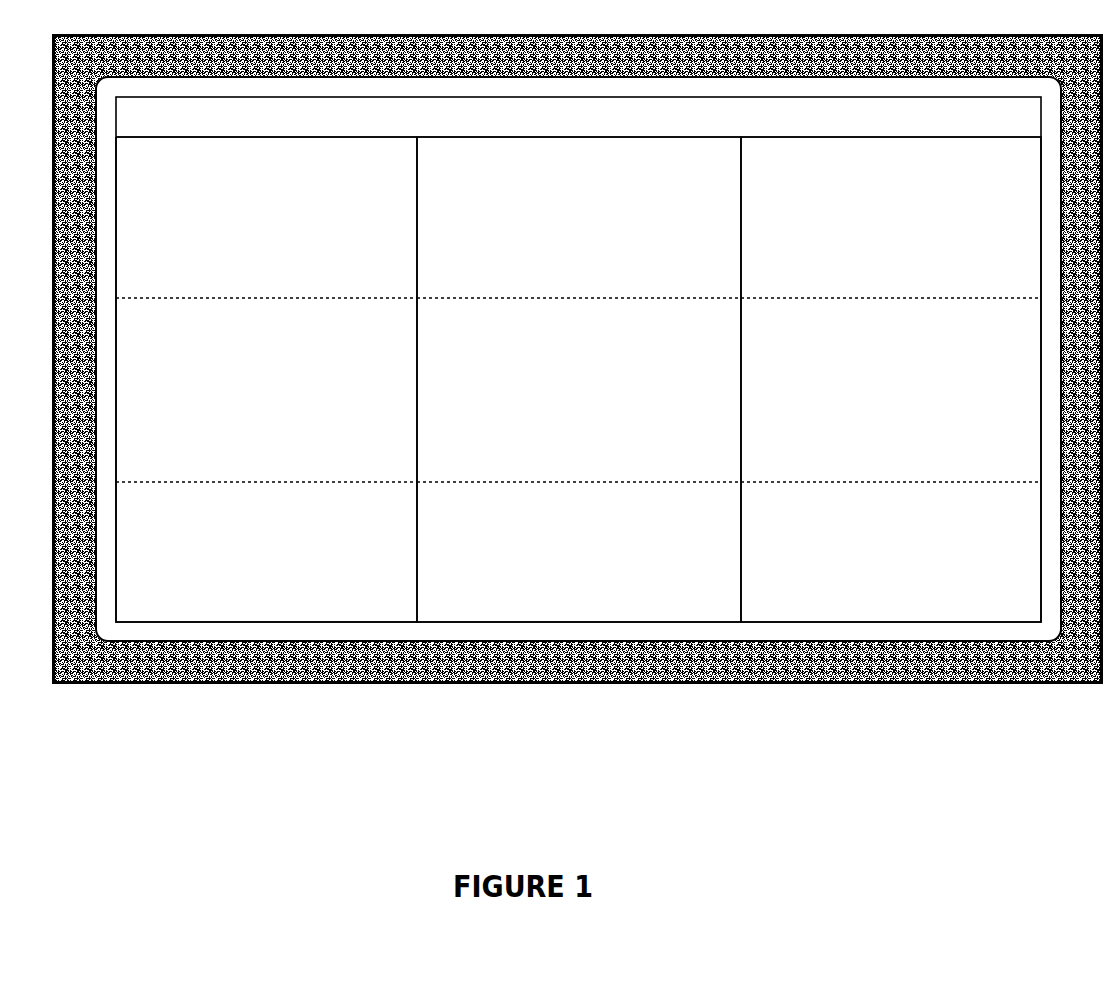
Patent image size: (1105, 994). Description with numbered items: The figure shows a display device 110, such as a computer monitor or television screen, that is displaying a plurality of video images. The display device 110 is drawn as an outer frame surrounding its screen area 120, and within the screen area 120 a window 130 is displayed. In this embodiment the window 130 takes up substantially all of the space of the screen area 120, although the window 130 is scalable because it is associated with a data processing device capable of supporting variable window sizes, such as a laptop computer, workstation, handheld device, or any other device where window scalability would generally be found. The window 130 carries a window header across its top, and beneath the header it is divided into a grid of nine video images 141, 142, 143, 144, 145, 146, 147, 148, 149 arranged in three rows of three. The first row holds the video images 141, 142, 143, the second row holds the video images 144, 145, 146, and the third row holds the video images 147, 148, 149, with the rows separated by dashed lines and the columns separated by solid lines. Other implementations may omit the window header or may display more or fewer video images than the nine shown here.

The display device 110 is at (297, 683).
The screen area 120 is at (456, 642).
The window 130 is at (618, 622).
The video image 141 is at (280, 233).
The video image 142 is at (600, 233).
The video image 143 is at (881, 233).
The video image 144 is at (280, 395).
The video image 145 is at (600, 395).
The video image 146 is at (881, 395).
The video image 147 is at (280, 556).
The video image 148 is at (599, 557).
The video image 149 is at (881, 556).